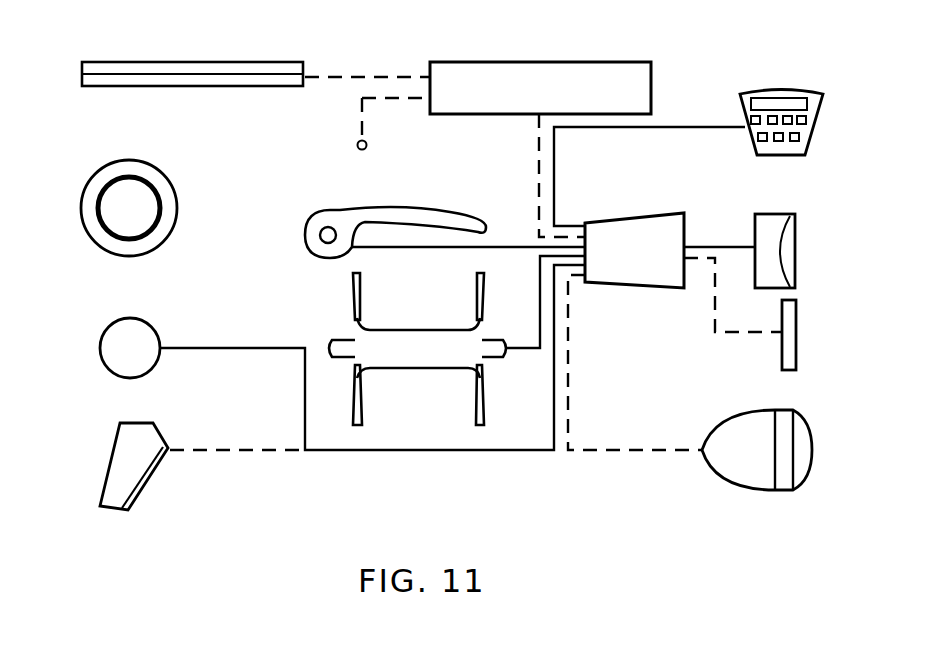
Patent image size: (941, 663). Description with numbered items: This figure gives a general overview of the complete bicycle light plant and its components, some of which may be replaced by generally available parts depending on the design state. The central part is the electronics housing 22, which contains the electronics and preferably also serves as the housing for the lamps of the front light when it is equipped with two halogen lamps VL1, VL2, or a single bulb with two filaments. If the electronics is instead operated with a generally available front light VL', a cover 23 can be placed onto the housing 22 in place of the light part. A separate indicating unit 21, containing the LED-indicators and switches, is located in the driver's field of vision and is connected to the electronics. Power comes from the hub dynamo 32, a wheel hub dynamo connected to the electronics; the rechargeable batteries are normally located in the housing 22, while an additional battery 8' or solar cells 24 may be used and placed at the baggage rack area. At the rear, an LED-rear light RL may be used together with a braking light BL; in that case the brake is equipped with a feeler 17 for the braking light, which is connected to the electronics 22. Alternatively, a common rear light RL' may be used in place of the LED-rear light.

The solar cells 24 is at (222, 60).
The additional battery 8' is at (540, 72).
The indicating unit 21 is at (783, 84).
The braking light BL is at (180, 210).
The feeler 17 is at (345, 208).
The electronics housing 22 is at (635, 289).
The halogen lamp VL1 is at (798, 265).
The halogen lamp VL2 is at (785, 251).
The cover 23 is at (799, 355).
The LED-rear light RL is at (106, 338).
The common rear light RL' is at (108, 466).
The hub dynamo 32 is at (415, 372).
The generally available front light VL' is at (788, 450).